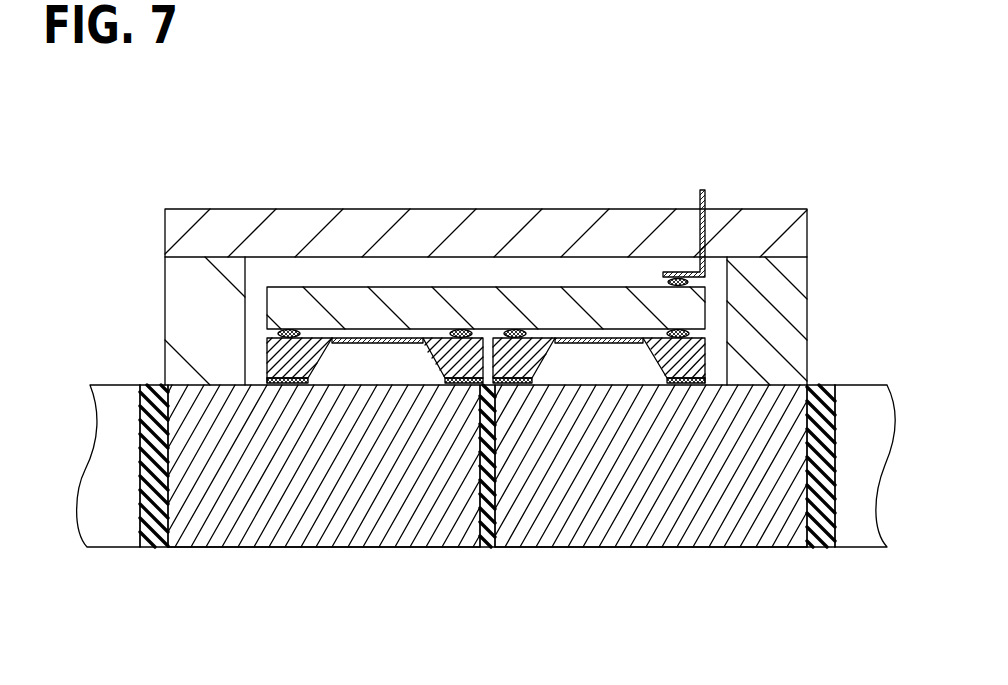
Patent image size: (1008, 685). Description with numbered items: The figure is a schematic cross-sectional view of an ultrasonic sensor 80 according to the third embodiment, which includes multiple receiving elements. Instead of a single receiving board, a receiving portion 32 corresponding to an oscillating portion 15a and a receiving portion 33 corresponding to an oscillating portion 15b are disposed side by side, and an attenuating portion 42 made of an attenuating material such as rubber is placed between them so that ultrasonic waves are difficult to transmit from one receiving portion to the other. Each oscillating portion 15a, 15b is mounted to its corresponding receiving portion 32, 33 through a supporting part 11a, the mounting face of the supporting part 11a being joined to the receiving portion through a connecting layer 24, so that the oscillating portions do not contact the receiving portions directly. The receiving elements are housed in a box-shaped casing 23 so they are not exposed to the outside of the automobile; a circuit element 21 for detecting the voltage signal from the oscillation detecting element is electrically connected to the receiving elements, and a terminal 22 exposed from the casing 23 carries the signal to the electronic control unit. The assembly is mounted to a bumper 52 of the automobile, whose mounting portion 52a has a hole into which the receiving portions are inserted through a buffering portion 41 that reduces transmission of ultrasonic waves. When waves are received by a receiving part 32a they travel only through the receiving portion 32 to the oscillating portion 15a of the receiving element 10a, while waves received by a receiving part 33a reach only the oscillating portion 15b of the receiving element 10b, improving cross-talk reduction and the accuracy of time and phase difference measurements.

The ultrasonic sensor 80 is at (770, 144).
The terminal 22 is at (707, 198).
The casing 23 is at (517, 210).
The circuit element 21 is at (460, 303).
The receiving element 10a is at (267, 350).
The receiving element 10b is at (708, 348).
The oscillating portion 15a is at (368, 337).
The oscillating portion 15b is at (602, 337).
The supporting part 11a is at (265, 375).
The connecting layer 24 is at (280, 402).
The receiving portion 32 is at (242, 533).
The receiving part 32a is at (345, 548).
The receiving portion 33 is at (707, 533).
The receiving part 33a is at (622, 548).
The attenuating portion 42 is at (478, 505).
The buffering portion 41 is at (162, 535).
The bumper 52 is at (108, 533).
The mounting portion 52a is at (150, 535).